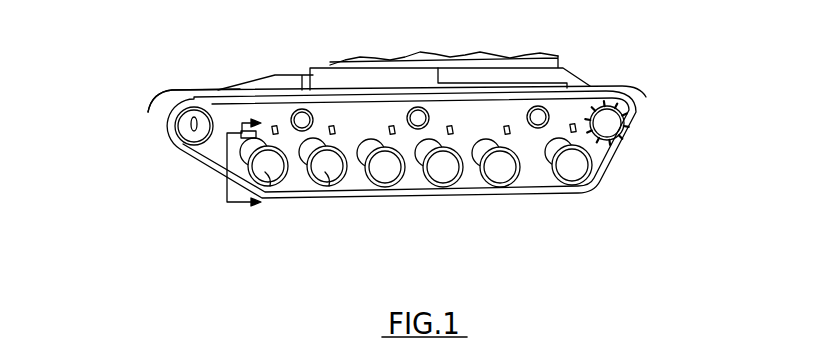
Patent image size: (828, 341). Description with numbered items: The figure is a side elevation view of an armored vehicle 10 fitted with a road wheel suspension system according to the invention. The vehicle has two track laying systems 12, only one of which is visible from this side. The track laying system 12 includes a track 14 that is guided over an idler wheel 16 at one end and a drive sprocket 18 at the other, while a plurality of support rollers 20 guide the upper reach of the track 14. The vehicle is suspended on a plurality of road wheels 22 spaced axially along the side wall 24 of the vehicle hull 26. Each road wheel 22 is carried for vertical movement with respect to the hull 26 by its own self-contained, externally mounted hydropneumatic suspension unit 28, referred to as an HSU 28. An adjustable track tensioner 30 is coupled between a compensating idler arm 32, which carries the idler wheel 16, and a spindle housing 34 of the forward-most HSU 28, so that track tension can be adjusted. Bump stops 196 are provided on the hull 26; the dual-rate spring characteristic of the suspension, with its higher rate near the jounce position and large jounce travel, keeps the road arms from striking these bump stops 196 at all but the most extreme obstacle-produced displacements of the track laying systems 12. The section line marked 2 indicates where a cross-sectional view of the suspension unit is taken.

The armored vehicle 10 is at (579, 66).
The track laying system 12 is at (163, 153).
The track 14 is at (514, 191).
The idler wheel 16 is at (187, 126).
The drive sprocket 18 is at (616, 121).
The support rollers 20 is at (417, 110).
The road wheels 22 is at (268, 172).
The side wall 24 is at (221, 137).
The vehicle hull 26 is at (188, 90).
The hydropneumatic suspension unit 28 is at (339, 119).
The adjustable track tensioner 30 is at (205, 132).
The compensating idler arm 32 is at (224, 128).
The spindle housing 34 is at (257, 130).
The bump stops 196 is at (507, 124).
The section line for FIG. 2 is at (229, 170).